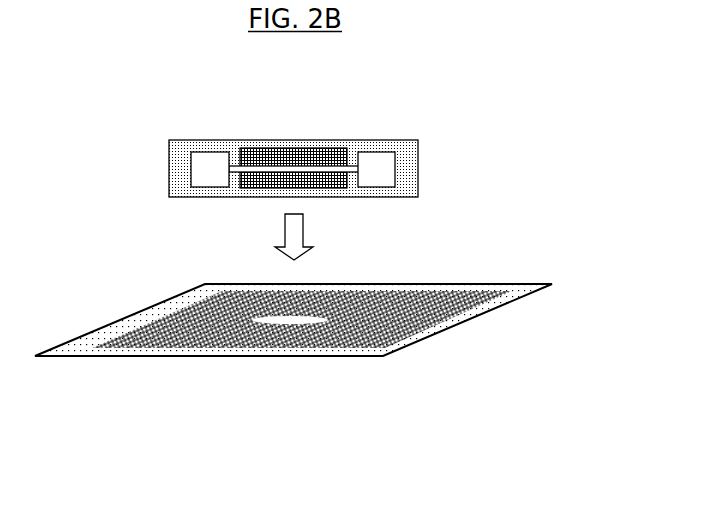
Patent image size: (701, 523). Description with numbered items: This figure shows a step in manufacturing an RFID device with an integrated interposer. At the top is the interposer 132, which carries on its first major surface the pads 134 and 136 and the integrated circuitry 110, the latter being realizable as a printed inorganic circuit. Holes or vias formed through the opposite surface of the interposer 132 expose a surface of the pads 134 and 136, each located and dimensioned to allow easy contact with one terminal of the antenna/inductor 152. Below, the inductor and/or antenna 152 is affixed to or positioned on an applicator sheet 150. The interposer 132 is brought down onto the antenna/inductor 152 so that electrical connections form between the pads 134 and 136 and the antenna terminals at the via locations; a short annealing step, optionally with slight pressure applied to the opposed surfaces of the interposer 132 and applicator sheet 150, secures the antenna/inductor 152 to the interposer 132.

The integrated circuitry 110 is at (288, 147).
The interposer 132 is at (421, 173).
The pad 134 is at (210, 151).
The pad 136 is at (381, 151).
The applicator sheet 150 is at (503, 312).
The antenna/inductor 152 is at (483, 288).